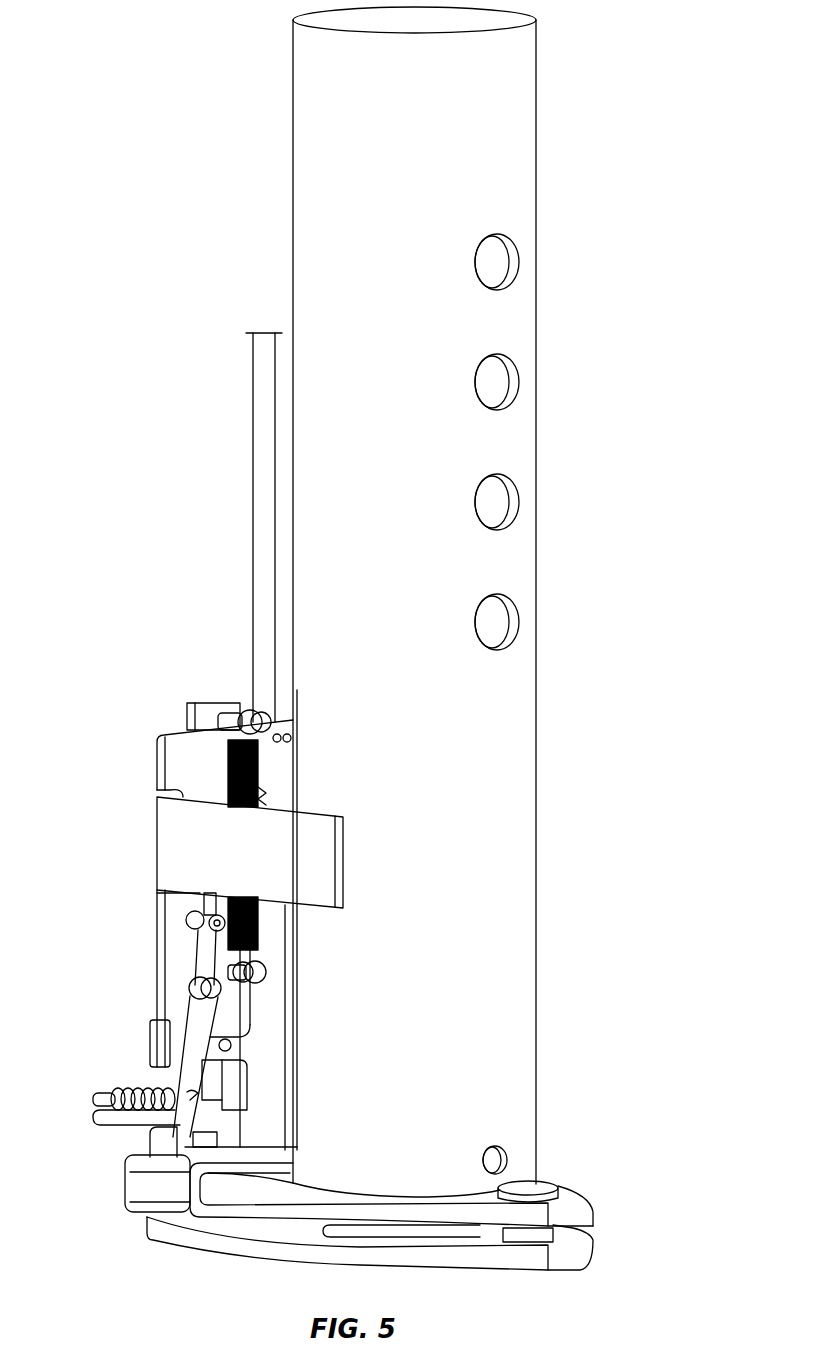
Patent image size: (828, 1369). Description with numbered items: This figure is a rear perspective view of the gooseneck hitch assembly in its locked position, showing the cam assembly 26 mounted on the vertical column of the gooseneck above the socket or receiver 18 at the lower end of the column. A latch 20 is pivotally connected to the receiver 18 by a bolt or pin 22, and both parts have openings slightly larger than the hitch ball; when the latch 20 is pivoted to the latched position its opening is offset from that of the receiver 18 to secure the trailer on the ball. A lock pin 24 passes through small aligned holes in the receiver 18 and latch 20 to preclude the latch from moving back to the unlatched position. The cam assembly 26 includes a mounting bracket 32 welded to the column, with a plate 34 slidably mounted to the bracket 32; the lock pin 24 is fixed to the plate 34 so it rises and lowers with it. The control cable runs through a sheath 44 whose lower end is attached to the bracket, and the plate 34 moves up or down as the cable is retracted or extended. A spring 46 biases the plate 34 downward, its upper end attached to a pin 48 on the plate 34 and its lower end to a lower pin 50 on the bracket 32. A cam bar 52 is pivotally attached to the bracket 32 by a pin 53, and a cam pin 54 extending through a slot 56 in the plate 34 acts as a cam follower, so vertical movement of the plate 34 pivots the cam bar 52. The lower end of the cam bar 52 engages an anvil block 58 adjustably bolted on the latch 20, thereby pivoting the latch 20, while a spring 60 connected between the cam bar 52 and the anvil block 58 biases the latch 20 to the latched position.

The receiver 18 is at (585, 1258).
The latch 20 is at (585, 1215).
The pin 22 is at (540, 1185).
The lock pin 24 is at (268, 1035).
The cam assembly 26 is at (142, 835).
The mounting bracket 32 is at (172, 760).
The plate 34 is at (200, 700).
The sheath 44 is at (262, 405).
The spring 46 is at (262, 792).
The pin 48 is at (268, 722).
The lower pin 50 is at (260, 972).
The cam bar 52 is at (195, 1022).
The pin 53 is at (185, 985).
The cam pin 54 is at (185, 915).
The slot 56 is at (172, 892).
The anvil block 58 is at (160, 1140).
The spring 60 is at (140, 1090).